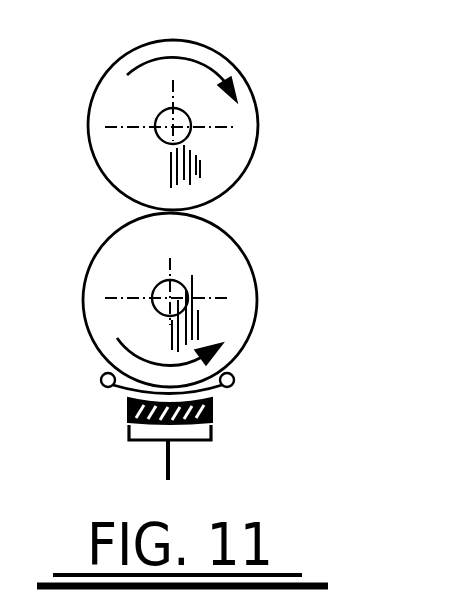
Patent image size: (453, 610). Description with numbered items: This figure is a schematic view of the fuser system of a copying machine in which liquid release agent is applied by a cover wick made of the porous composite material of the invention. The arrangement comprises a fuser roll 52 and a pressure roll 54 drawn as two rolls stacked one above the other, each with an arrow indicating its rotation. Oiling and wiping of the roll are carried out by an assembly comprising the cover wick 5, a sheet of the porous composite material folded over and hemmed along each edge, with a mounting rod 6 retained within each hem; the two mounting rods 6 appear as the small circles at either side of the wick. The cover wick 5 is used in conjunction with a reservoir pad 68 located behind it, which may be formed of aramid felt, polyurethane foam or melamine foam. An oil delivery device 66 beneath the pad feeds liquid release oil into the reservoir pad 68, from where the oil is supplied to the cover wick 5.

The upper roller 52 is at (148, 102).
The lower roller 54 is at (140, 285).
The mounting rod 6 is at (101, 381).
The cover wick 5 is at (125, 389).
The reservoir pad 68 is at (212, 413).
The oil delivery device 66 is at (190, 442).